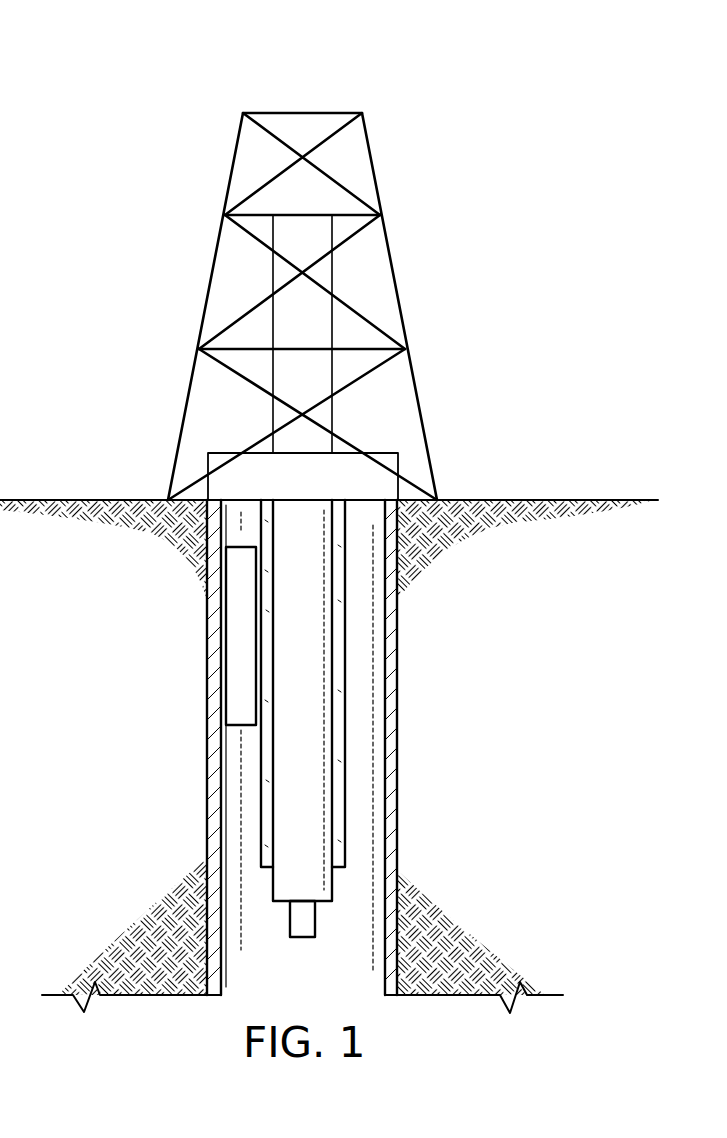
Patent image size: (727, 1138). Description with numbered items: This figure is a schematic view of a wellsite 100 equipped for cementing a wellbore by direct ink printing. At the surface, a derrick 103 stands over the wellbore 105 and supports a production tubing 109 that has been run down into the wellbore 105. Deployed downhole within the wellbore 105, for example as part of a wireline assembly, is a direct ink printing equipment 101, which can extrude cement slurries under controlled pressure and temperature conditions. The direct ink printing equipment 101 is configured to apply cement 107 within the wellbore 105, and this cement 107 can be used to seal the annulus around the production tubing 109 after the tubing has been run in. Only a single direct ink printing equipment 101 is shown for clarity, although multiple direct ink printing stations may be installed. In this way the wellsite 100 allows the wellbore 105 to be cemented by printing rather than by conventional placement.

The wellsite 100 is at (128, 75).
The direct ink printing equipment 101 is at (237, 633).
The derrick 103 is at (375, 168).
The wellbore 105 is at (135, 776).
The cement 107 is at (345, 683).
The production tubing 109 is at (313, 803).